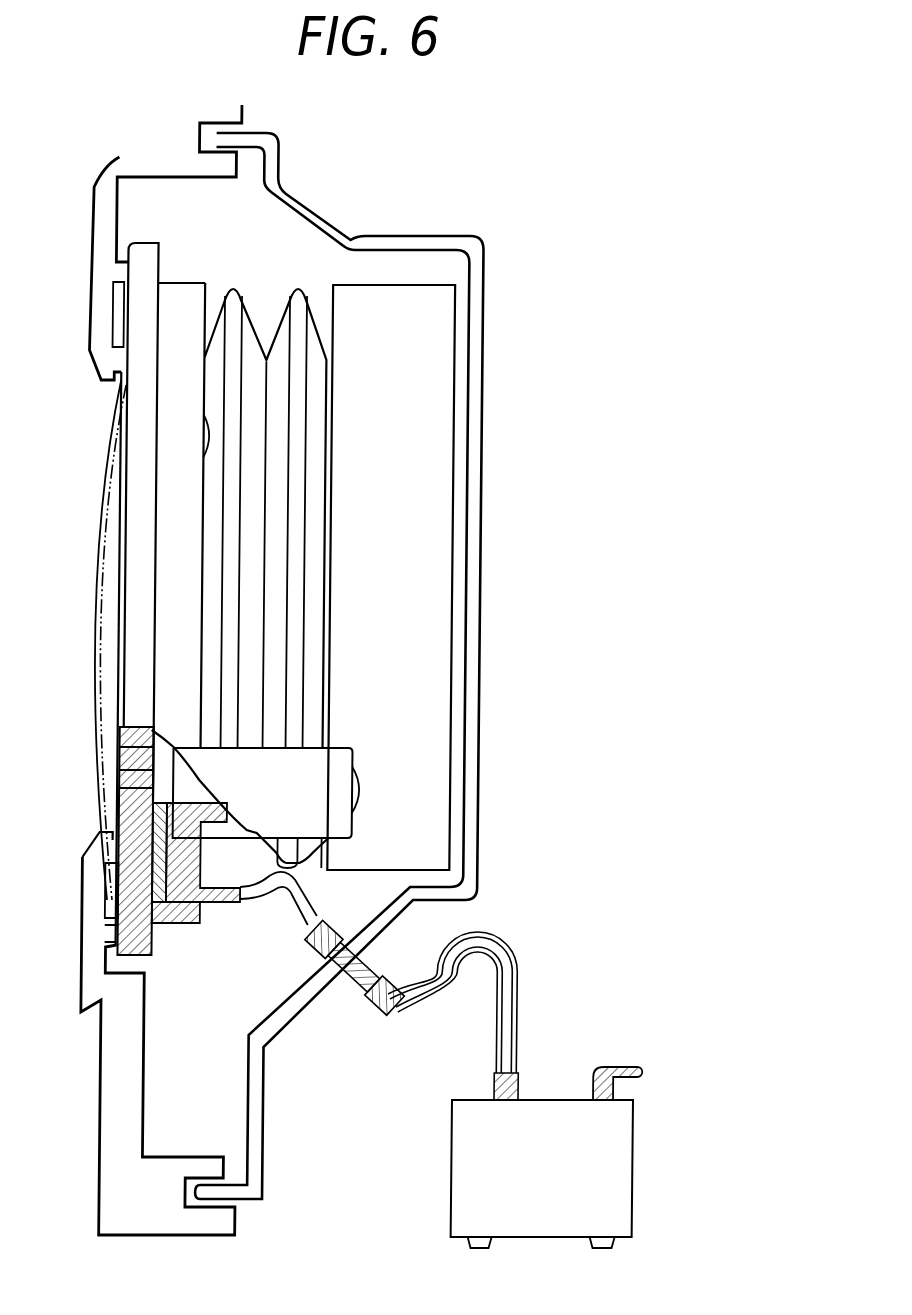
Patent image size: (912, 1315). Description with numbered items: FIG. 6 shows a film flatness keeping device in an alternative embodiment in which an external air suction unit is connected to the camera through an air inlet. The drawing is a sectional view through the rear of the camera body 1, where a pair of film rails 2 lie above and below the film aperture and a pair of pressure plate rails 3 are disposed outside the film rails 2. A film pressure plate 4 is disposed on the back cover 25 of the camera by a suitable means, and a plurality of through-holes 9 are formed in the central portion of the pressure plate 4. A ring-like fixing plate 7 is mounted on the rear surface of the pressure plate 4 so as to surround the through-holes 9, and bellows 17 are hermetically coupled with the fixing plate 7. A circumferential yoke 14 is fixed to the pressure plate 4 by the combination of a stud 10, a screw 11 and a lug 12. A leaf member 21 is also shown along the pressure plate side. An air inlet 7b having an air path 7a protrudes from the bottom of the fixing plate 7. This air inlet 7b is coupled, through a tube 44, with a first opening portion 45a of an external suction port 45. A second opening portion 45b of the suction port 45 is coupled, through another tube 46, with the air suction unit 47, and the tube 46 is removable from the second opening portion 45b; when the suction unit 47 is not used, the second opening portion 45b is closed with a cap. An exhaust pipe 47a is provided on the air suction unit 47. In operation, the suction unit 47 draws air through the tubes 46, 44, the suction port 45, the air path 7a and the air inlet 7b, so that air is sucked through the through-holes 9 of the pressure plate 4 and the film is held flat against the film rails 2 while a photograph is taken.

The camera body 1 is at (158, 160).
The film rails 2 is at (113, 362).
The pressure plate rails 3 is at (120, 272).
The film pressure plate 4 is at (130, 337).
The fixing plate 7 is at (173, 302).
The air path 7a is at (174, 902).
The air inlet 7b is at (220, 925).
The through-holes 9 is at (123, 789).
The stud 10 is at (308, 778).
The screw 11 is at (363, 787).
The lug 12 is at (348, 825).
The circumferential yoke 14 is at (423, 297).
The bellows 17 is at (248, 331).
The leaf spring 21 is at (120, 593).
The back cover 25 is at (357, 235).
The tube 44 is at (280, 928).
The external suction port 45 is at (414, 1005).
The first opening portion 45a is at (324, 939).
The second opening portion 45b is at (367, 960).
The tube 46 is at (431, 1010).
The air suction unit 47 is at (476, 1180).
The exhaust pipe 47a is at (622, 1067).